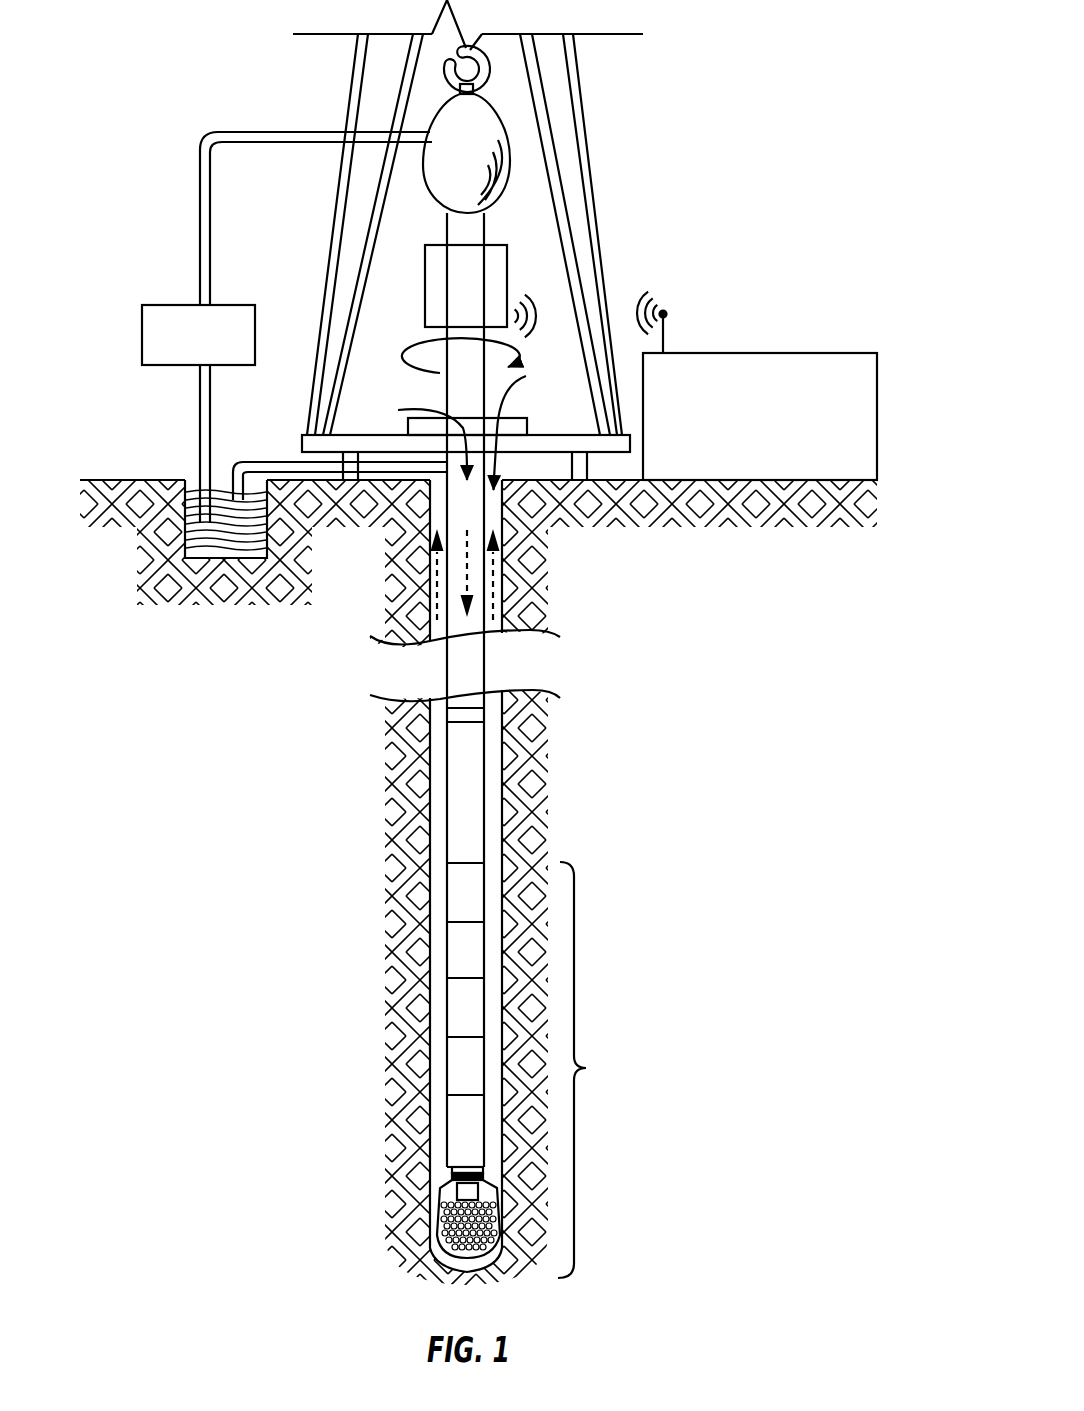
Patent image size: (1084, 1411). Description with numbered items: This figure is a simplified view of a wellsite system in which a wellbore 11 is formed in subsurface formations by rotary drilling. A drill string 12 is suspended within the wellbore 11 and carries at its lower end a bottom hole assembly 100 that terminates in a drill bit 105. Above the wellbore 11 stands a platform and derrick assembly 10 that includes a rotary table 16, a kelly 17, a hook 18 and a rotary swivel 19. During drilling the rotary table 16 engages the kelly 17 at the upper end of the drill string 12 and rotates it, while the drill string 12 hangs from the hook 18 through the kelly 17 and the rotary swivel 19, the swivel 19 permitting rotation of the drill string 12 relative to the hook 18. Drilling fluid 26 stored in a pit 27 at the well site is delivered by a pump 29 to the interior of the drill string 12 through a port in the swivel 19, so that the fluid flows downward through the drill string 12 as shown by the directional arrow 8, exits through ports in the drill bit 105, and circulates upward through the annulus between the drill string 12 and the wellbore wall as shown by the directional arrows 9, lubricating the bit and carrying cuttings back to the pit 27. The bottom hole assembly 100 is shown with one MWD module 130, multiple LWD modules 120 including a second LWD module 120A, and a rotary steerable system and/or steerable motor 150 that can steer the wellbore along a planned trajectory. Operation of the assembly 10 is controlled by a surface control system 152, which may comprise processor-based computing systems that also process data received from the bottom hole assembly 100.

The platform and derrick assembly 10 is at (603, 147).
The hook 18 is at (497, 78).
The rotary swivel 19 is at (460, 172).
The rotary table 16 is at (500, 454).
The kelly 17 is at (447, 392).
The drill string 12 is at (417, 436).
The wellbore 11 is at (522, 432).
The control system 152 is at (828, 352).
The pump 29 is at (166, 365).
The pit 27 is at (186, 466).
The drilling fluid 26 is at (217, 545).
The directional arrows 9 is at (437, 585).
The directional arrow 8 is at (470, 587).
The bottom hole assembly 100 is at (541, 986).
The LWD module 120 is at (458, 952).
The MWD module 130 is at (443, 1012).
The second LWD module 120A is at (460, 1067).
The rotary steerable directional drilling system and/or steerable motor 150 is at (458, 1128).
The drill bit 105 is at (440, 1208).